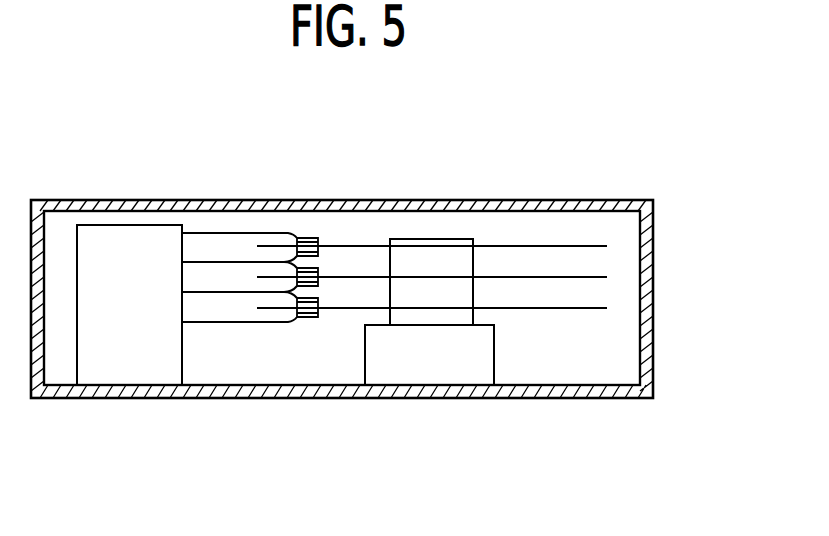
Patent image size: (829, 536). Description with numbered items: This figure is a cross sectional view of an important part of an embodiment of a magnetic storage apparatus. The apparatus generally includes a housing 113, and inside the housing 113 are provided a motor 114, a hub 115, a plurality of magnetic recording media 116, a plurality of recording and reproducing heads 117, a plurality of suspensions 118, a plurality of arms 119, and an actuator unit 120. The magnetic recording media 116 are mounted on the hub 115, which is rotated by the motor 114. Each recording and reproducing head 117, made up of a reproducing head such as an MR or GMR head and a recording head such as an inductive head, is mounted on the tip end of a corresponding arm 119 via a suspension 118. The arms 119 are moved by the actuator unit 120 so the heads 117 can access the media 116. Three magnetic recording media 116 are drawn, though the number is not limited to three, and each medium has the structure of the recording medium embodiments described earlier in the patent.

The housing 113 is at (643, 372).
The motor 114 is at (432, 398).
The hub 115 is at (432, 235).
The magnetic recording media 116 is at (543, 243).
The recording and reproducing heads 117 is at (317, 237).
The suspensions 118 is at (293, 237).
The arms 119 is at (215, 232).
The actuator unit 120 is at (123, 398).